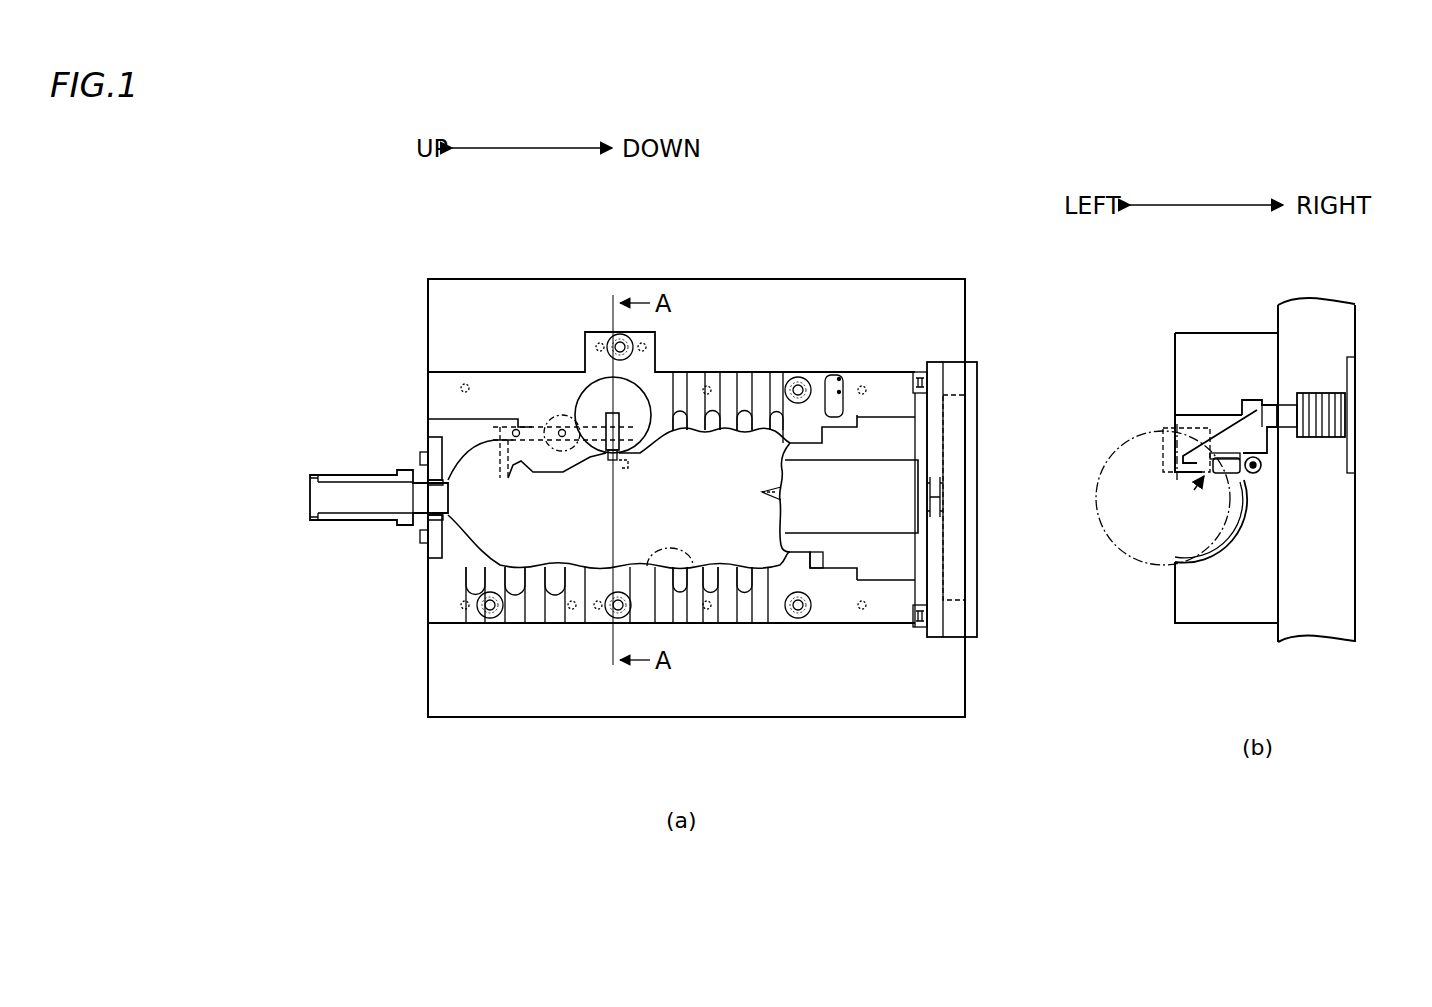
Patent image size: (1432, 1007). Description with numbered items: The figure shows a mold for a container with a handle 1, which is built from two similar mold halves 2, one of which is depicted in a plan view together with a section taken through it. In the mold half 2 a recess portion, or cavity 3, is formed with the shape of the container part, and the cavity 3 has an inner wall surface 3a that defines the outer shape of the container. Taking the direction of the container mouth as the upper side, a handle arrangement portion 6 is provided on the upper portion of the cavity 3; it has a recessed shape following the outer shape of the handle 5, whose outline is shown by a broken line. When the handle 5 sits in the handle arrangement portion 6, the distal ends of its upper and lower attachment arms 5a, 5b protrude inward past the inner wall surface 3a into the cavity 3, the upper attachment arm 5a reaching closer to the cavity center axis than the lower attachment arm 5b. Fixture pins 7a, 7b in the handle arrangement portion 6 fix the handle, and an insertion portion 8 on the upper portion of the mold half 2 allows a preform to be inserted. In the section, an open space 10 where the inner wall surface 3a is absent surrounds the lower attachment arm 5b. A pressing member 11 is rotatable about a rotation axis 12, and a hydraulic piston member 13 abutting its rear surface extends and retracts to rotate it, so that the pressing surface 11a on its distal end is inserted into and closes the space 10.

The mold for a container with a handle 1 is at (733, 232).
The mold half 2 is at (850, 316).
The recess portion (cavity) 3 is at (738, 452).
The inner wall surface 3a is at (692, 563).
The handle 5 is at (502, 428).
The upper attachment arm 5a is at (500, 480).
The lower attachment arm 5b is at (612, 468).
The handle arrangement portion 6 is at (492, 432).
The fixture pin 7a is at (513, 427).
The fixture pin 7b is at (561, 430).
The insertion portion 8 is at (360, 490).
The open space 10 is at (1200, 485).
The pressing member 11 is at (630, 430).
The pressing surface 11a is at (1170, 462).
The rotation axis 12 is at (1263, 467).
The hydraulic piston member 13 is at (1287, 407).